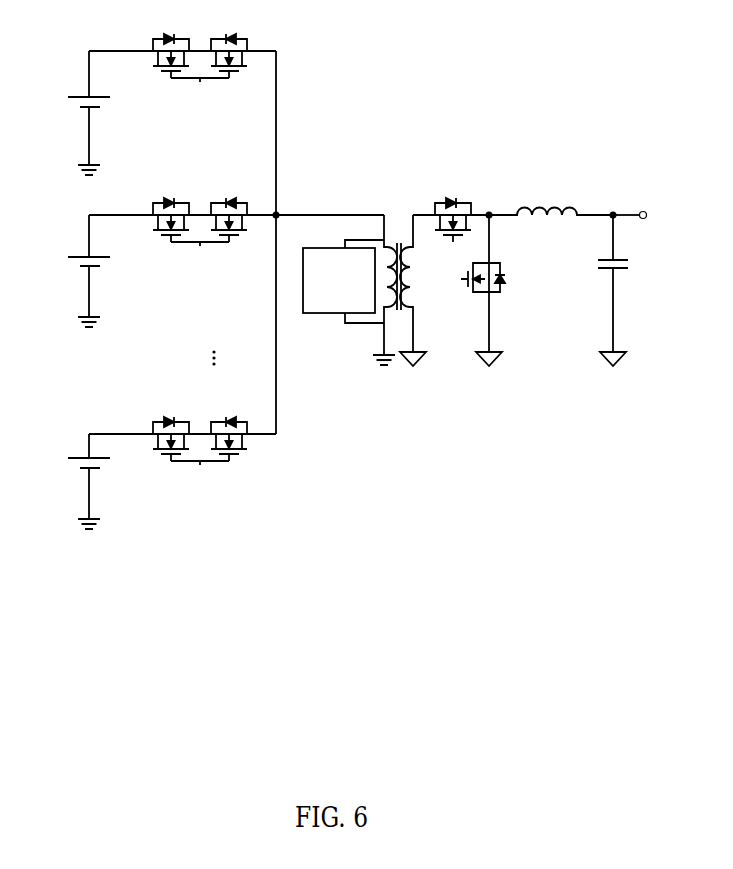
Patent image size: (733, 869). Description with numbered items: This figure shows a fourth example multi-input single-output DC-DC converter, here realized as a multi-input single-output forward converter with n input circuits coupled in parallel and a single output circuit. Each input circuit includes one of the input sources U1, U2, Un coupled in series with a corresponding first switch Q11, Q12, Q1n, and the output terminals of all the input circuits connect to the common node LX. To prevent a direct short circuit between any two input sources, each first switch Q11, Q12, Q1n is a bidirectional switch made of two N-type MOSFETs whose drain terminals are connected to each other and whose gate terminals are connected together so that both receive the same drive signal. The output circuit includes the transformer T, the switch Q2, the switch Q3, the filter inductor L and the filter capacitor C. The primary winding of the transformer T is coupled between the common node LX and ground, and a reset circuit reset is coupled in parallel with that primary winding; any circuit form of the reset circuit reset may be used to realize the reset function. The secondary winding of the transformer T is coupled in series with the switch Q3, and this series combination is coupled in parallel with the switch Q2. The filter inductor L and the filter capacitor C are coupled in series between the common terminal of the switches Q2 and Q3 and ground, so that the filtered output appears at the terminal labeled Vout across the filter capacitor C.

The first switch of the first input circuit Q11 is at (182, 50).
The first switch of the second input circuit Q12 is at (182, 215).
The first switch of the n-th input circuit Q1n is at (182, 433).
The input source U1 is at (74, 113).
The input source U2 is at (71, 271).
The input source Un is at (70, 481).
The common node LX is at (329, 242).
The reset circuit reset is at (343, 281).
The transformer T is at (399, 290).
The switch Q3 is at (456, 212).
The switch Q2 is at (493, 289).
The filter inductor L is at (551, 196).
The output voltage terminal Vout is at (643, 202).
The filter capacitor C is at (623, 290).